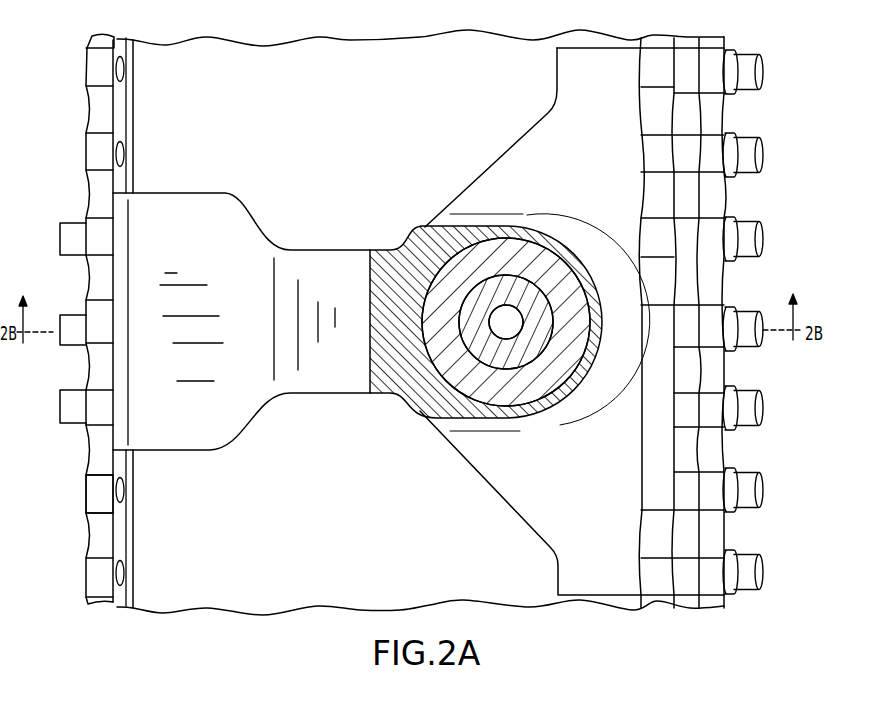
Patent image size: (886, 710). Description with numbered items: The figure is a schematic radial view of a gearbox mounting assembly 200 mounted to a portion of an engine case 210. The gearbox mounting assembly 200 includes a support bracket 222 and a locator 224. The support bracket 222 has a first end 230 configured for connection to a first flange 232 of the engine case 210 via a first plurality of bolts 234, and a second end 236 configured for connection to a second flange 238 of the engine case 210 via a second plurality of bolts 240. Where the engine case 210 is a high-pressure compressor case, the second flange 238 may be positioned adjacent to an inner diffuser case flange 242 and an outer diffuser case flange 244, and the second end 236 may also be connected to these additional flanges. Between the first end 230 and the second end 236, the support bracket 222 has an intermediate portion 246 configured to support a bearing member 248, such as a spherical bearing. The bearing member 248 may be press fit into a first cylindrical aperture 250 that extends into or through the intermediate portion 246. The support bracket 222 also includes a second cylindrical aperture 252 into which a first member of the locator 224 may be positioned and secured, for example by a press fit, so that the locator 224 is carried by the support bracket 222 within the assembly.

The gearbox mounting assembly 200 is at (300, 176).
The engine case 210 is at (414, 96).
The support bracket 222 is at (210, 432).
The locator 224 is at (519, 283).
The first end 230 is at (115, 230).
The first flange 232 is at (88, 488).
The first plurality of bolts 234 is at (68, 338).
The second end 236 is at (572, 508).
The second flange 238 is at (660, 575).
The second plurality of bolts 240 is at (745, 337).
The inner diffuser case flange 242 is at (687, 585).
The outer diffuser case flange 244 is at (715, 587).
The intermediate portion 246 is at (408, 388).
The bearing member 248 is at (450, 268).
The first cylindrical aperture 250 is at (455, 385).
The second cylindrical aperture 252 is at (522, 366).